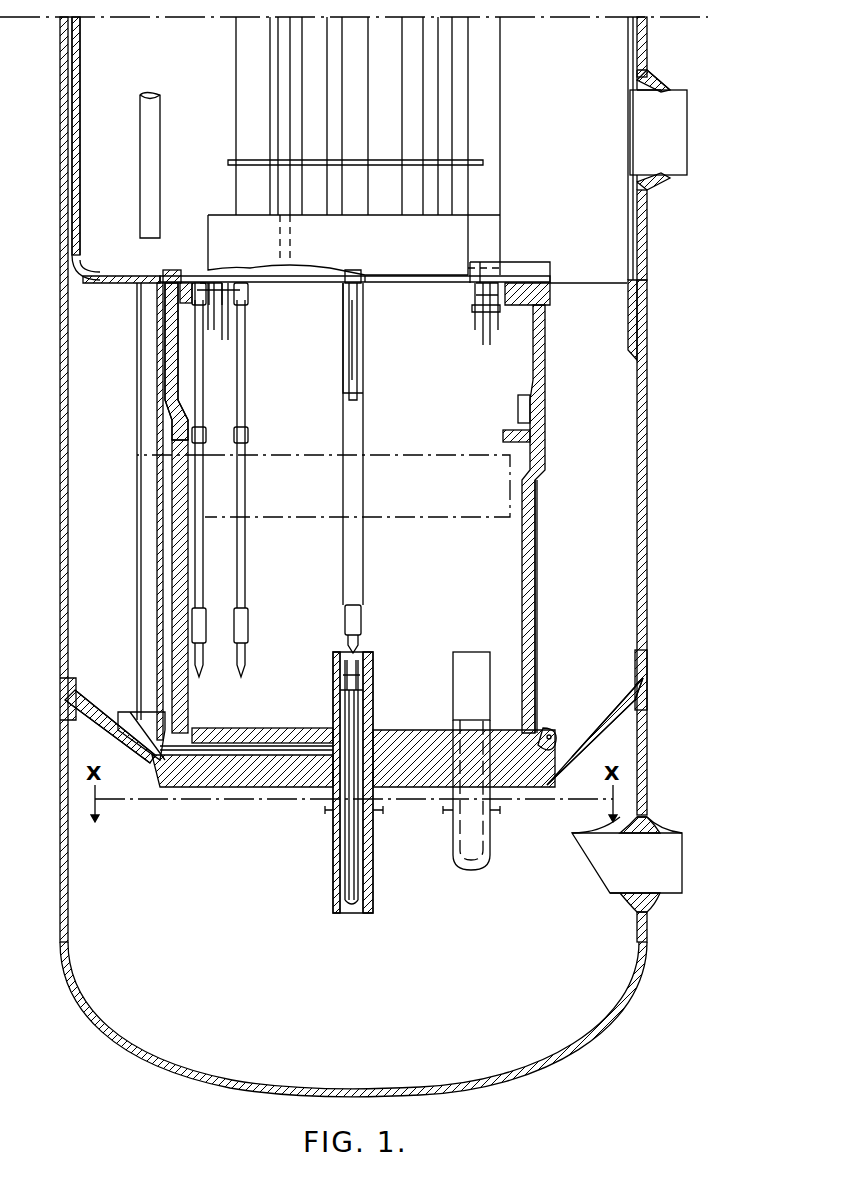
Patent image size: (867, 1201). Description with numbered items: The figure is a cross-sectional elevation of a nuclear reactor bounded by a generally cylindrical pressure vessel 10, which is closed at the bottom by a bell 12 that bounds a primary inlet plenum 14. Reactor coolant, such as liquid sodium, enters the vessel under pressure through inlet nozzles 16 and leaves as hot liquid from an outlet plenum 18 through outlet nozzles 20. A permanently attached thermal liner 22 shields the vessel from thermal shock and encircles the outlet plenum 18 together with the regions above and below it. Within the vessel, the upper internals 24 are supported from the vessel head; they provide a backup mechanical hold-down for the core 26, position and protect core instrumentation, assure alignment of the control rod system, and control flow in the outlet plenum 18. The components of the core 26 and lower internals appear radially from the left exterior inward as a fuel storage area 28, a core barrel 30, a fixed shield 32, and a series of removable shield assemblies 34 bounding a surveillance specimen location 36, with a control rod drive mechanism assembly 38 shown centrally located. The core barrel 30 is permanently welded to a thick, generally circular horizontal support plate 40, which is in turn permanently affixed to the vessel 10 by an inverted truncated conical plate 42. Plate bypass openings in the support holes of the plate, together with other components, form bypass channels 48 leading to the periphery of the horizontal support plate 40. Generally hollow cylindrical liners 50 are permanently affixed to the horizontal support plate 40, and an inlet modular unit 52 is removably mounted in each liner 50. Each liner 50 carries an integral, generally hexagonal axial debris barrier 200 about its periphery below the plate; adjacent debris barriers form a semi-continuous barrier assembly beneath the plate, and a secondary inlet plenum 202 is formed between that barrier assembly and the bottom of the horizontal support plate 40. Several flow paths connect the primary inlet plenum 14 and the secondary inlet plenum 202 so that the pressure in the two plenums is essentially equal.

The pressure vessel 10 is at (650, 399).
The bell 12 is at (146, 1052).
The primary inlet plenum 14 is at (395, 1006).
The inlet nozzles 16 is at (651, 822).
The outlet plenum 18 is at (571, 85).
The outlet nozzles 20 is at (652, 80).
The thermal liner 22 is at (627, 72).
The upper internals 24 is at (395, 85).
The core 26 is at (472, 495).
The fuel storage area 28 is at (150, 343).
The core barrel 30 is at (170, 416).
The fixed shield 32 is at (181, 512).
The removable shield assemblies 34 is at (239, 679).
The surveillance specimen location 36 is at (232, 563).
The control rod drive mechanism assembly 38 is at (364, 573).
The horizontal support plate 40 is at (300, 730).
The inverted truncated conical plate 42 is at (600, 705).
The bypass channels 48 is at (255, 748).
The liners 50 is at (374, 720).
The inlet modular unit 52 is at (375, 677).
The axial debris barrier 200 is at (336, 812).
The secondary inlet plenum 202 is at (431, 815).